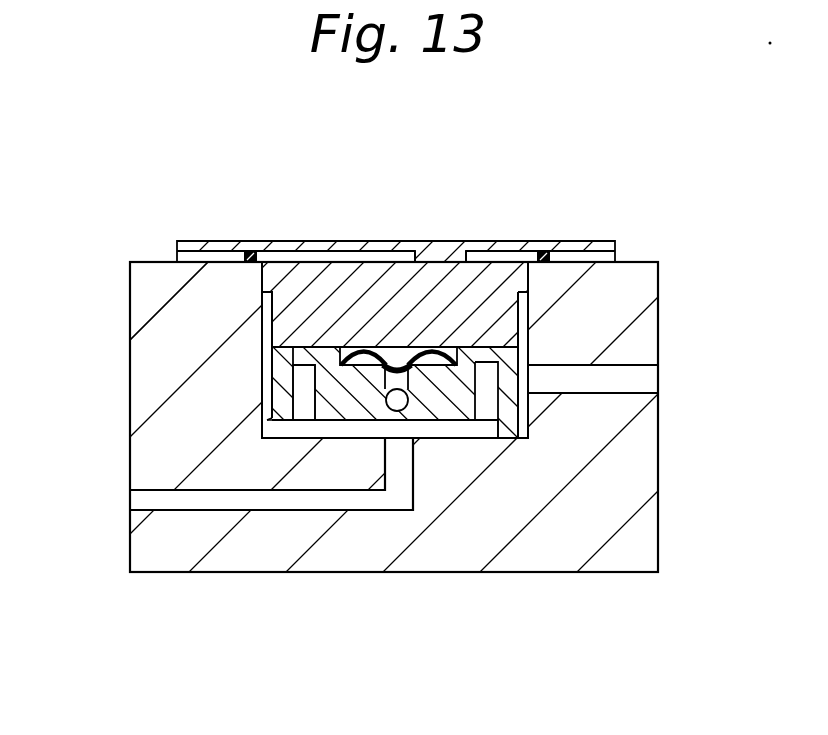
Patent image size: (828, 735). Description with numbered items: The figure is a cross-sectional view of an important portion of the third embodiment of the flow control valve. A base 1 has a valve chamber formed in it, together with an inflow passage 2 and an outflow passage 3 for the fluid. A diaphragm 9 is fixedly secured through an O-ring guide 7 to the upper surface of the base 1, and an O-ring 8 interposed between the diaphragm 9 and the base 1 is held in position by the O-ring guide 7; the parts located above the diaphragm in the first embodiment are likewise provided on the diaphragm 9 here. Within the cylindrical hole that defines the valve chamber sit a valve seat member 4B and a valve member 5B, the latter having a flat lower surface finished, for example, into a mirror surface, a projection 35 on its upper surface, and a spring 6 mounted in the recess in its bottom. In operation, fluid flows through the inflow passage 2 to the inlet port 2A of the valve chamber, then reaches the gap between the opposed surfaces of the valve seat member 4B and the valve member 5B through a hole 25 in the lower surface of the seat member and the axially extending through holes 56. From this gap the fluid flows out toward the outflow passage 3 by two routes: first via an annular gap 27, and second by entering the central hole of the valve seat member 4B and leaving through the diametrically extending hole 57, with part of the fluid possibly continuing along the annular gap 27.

The base 1 is at (642, 485).
The inflow passage 2 is at (137, 500).
The inlet port 2A is at (407, 430).
The outflow passage 3 is at (652, 379).
The valve seat member 4B is at (268, 407).
The valve member 5B is at (265, 281).
The spring 6 is at (396, 345).
The O-ring guide 7 is at (624, 250).
The O-ring 8 is at (254, 256).
The diaphragm 9 is at (604, 242).
The hole 25 is at (353, 433).
The annular gap 27 is at (263, 358).
The projection 35 is at (417, 250).
The through holes 56 is at (306, 410).
The hole 57 is at (400, 408).